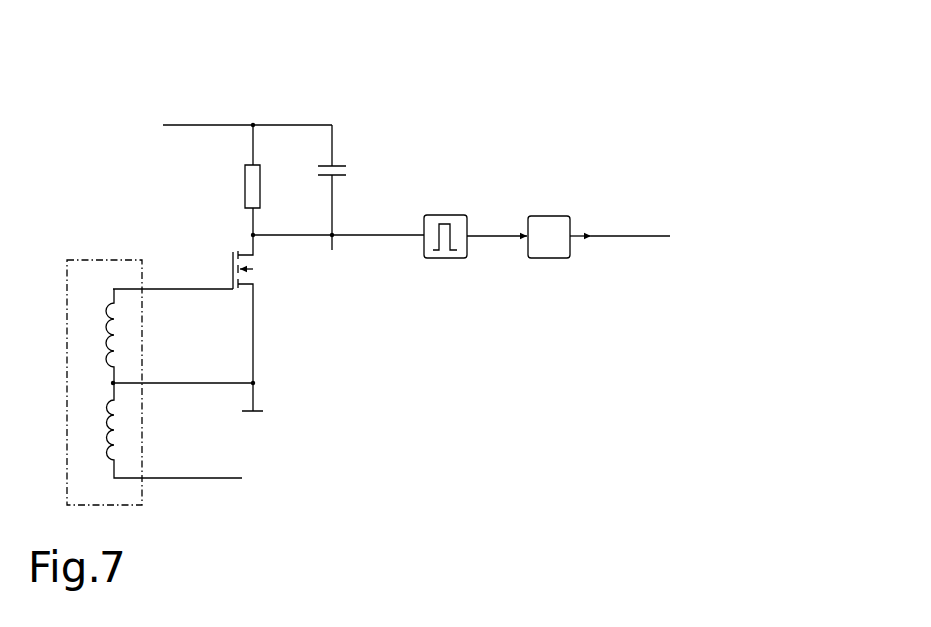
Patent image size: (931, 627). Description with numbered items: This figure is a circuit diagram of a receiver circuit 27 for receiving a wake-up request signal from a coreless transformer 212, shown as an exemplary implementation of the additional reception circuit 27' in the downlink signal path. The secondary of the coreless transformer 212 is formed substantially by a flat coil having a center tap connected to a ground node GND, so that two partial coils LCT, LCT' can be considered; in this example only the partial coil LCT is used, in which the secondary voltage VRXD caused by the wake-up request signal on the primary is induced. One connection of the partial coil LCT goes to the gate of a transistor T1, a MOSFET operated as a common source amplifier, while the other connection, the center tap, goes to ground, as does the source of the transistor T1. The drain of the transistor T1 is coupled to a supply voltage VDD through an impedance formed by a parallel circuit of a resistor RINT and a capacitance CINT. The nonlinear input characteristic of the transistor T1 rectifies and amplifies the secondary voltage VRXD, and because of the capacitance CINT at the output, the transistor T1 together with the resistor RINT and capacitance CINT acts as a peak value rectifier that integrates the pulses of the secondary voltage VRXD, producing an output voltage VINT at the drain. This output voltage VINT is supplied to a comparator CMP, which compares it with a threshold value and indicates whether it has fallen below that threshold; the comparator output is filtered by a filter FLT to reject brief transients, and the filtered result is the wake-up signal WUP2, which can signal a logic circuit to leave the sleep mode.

The additional reception circuit 27' is at (408, 297).
The receiver circuit 27 is at (408, 297).
The coreless transformer 212 is at (154, 373).
The supply voltage VDD is at (247, 113).
The resistor RINT is at (271, 180).
The capacitance CINT is at (349, 187).
The transistor T1 is at (229, 309).
The ground node GND is at (270, 410).
The output voltage VINT is at (273, 380).
The secondary voltage VRXD is at (158, 300).
The comparator CMP is at (445, 215).
The filter FLT is at (549, 237).
The wake-up signal WUP2 is at (620, 226).
The partial coil LCT is at (96, 336).
The partial coil LCT' is at (160, 430).